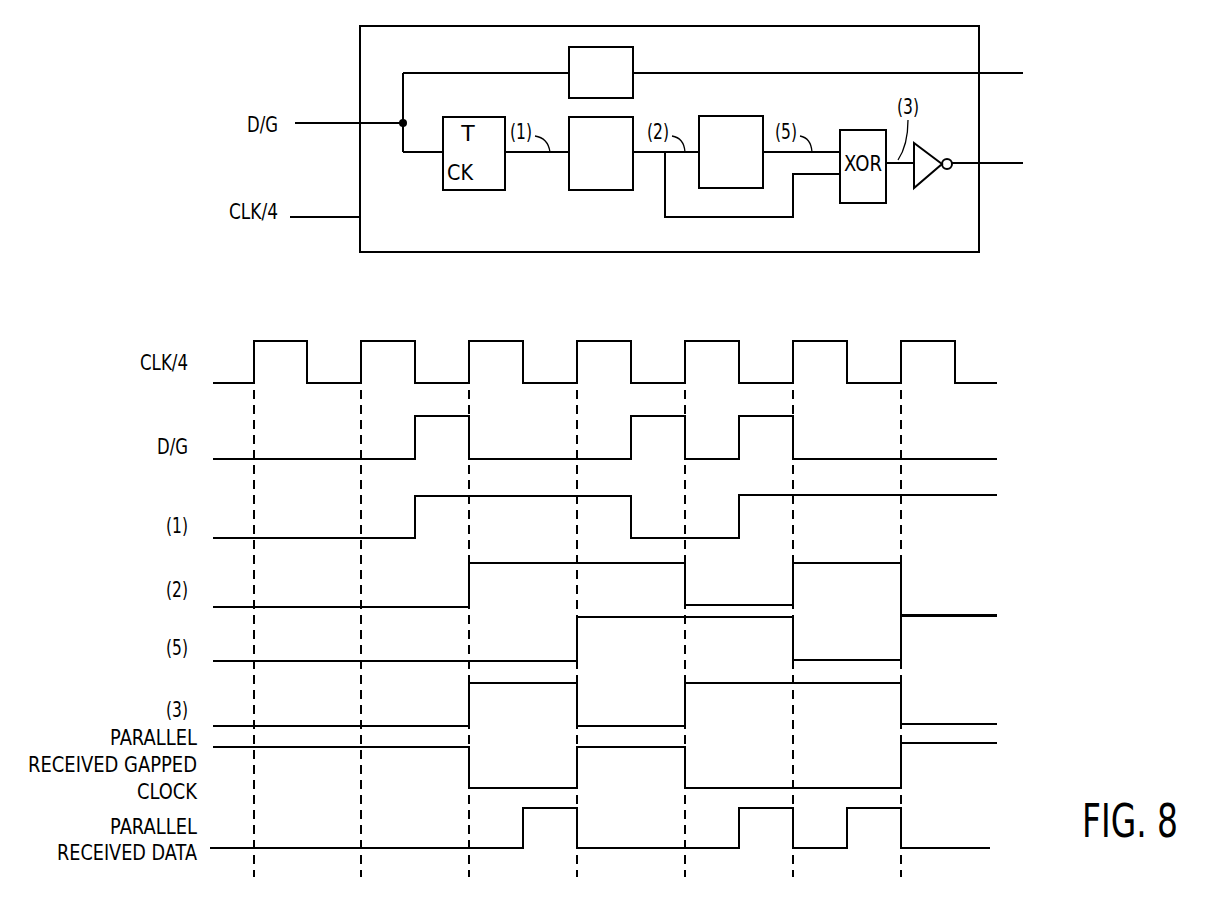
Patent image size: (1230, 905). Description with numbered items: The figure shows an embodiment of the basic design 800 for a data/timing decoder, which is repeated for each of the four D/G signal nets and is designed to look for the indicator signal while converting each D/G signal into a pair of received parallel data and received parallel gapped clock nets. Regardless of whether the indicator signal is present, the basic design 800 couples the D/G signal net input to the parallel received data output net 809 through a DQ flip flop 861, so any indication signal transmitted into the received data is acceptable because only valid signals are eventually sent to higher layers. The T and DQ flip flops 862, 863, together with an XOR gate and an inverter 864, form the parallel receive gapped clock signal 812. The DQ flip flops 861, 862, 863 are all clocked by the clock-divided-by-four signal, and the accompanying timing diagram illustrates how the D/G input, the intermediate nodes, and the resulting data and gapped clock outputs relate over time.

The basic design 800 is at (617, 240).
The DQ flip flop 861 is at (634, 48).
The T and DQ flip flops 862 is at (571, 178).
The DQ flip flop 863 is at (719, 130).
The inverter 864 is at (943, 173).
The parallel received data output net 809 is at (1003, 74).
The parallel receive gapped clock signal 812 is at (1003, 164).